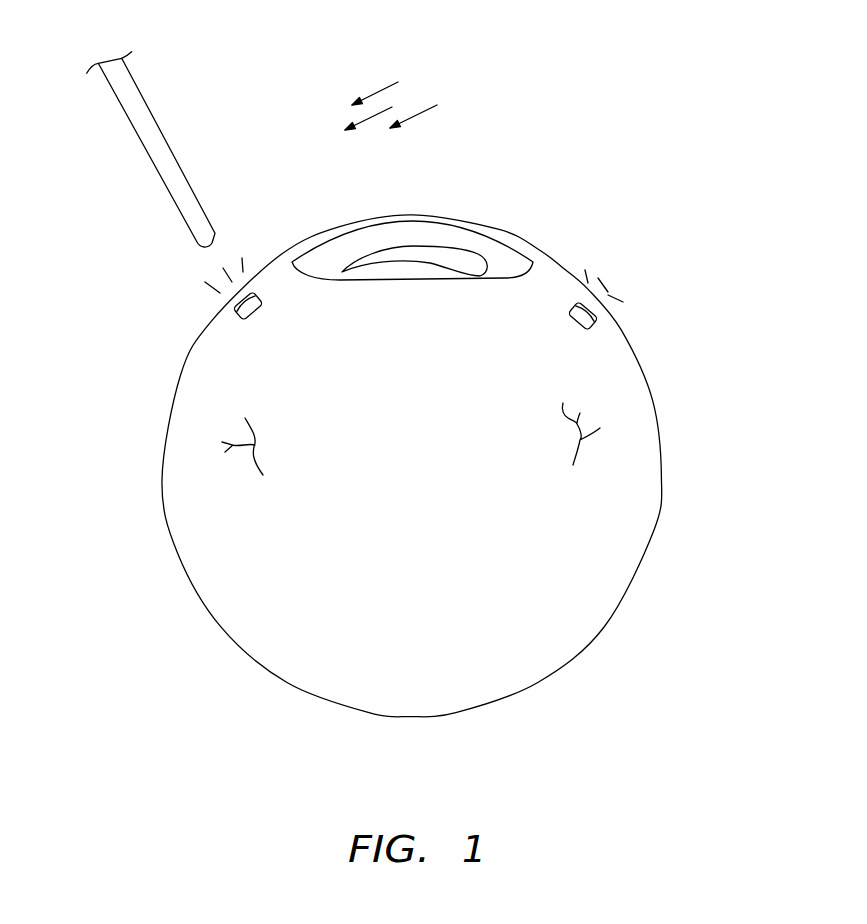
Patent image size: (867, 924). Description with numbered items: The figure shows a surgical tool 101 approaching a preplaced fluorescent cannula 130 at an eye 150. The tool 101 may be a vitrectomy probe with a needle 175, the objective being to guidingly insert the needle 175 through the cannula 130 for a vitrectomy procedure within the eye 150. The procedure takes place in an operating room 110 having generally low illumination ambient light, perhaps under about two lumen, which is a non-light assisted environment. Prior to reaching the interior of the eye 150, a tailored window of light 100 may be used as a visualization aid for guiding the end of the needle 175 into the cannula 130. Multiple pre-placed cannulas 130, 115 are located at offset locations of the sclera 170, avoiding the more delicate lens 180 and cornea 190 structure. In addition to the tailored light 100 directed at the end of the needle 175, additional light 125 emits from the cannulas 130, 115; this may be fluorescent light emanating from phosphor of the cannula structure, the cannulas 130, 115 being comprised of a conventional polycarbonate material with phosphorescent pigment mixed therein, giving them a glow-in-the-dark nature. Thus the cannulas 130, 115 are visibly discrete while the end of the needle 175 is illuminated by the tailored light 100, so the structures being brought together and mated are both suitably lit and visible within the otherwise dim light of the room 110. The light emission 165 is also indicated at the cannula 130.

The tailored window of light 100 is at (430, 65).
The surgical tool 101 is at (157, 112).
The operating room 110 is at (652, 164).
The cannula 115 is at (597, 327).
The additional light 125 is at (623, 305).
The fluorescent cannula 130 is at (237, 313).
The eye 150 is at (157, 287).
The first light emission 165 is at (252, 255).
The sclera 170 is at (648, 413).
The needle 175 is at (210, 212).
The lens 180 is at (458, 263).
The cornea 190 is at (435, 230).